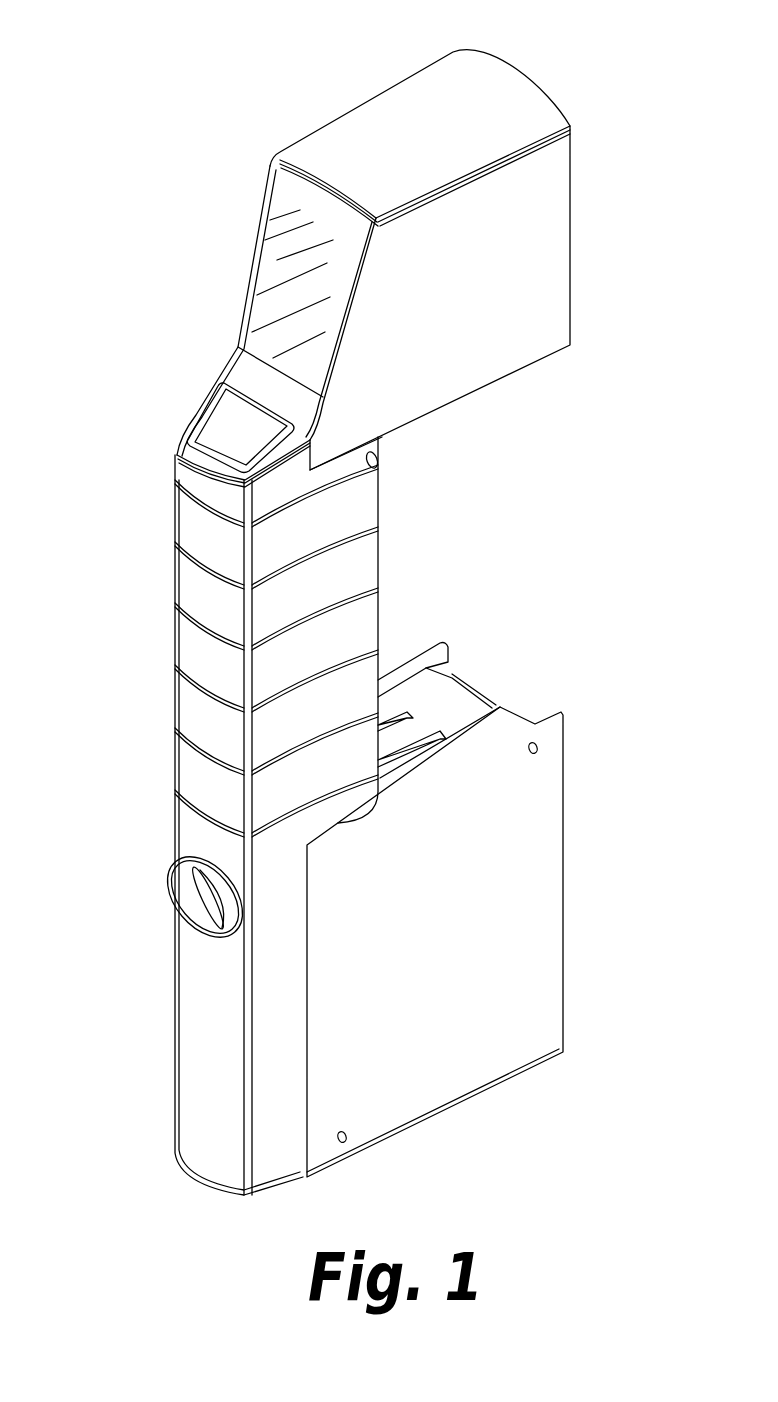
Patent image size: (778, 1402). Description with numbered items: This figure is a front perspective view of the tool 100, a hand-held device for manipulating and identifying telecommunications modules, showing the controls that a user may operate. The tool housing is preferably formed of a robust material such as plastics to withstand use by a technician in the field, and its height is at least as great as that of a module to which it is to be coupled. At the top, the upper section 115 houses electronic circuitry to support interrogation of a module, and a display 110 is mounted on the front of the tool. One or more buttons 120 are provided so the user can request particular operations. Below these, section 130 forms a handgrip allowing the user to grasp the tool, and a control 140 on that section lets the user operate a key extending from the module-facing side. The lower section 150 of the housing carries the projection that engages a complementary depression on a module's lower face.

The tool 100 is at (203, 102).
The display 110 is at (268, 258).
The upper section 115 is at (555, 222).
The buttons 120 is at (235, 432).
The section 130 is at (195, 655).
The control 140 is at (185, 888).
The lower section 150 is at (527, 882).